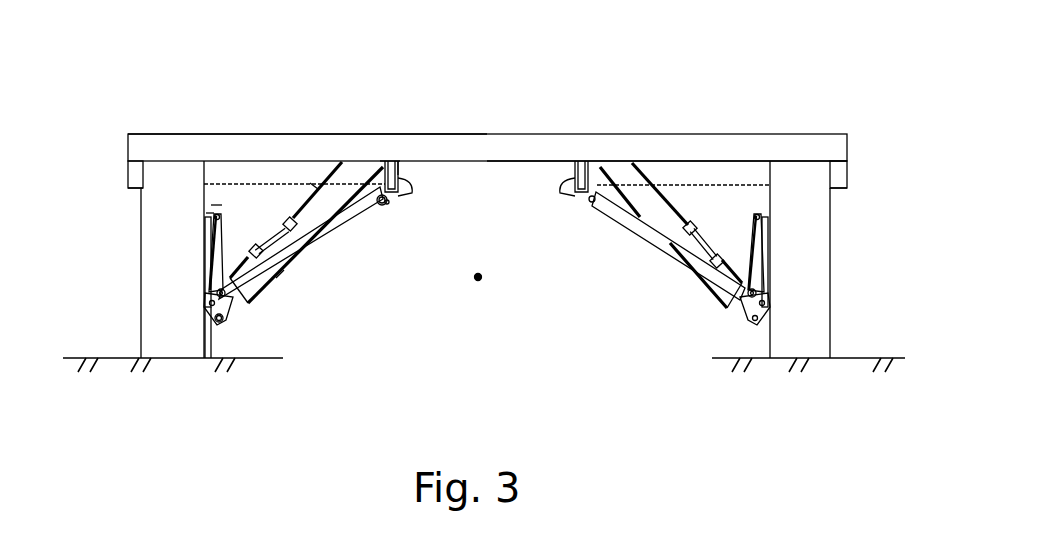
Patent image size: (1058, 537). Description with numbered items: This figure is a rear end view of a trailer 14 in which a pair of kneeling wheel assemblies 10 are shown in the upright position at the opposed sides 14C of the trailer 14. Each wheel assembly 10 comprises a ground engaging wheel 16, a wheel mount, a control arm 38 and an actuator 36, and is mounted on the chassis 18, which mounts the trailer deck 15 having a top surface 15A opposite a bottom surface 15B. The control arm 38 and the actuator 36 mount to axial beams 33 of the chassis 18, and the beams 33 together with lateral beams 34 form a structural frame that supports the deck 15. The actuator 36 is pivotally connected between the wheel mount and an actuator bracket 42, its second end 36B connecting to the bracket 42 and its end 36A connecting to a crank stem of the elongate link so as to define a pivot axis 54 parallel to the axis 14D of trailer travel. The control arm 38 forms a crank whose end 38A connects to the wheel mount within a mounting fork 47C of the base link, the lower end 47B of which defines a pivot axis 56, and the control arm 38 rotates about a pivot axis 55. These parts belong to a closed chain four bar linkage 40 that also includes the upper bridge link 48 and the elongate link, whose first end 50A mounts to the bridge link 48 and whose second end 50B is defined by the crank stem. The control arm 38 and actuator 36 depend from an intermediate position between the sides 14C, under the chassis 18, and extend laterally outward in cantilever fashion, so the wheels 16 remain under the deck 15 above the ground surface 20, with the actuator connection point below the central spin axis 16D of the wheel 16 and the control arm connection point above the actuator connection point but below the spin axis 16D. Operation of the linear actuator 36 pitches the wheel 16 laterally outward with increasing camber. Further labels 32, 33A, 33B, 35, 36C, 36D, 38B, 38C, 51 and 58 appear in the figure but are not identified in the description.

The wheel assembly 10 is at (122, 72).
The trailer 14 is at (535, 137).
The opposed sides of the trailer 14C is at (118, 160).
The axis of trailer travel 14D is at (482, 278).
The trailer deck 15 is at (742, 136).
The top surface of the deck 15A is at (430, 134).
The bottom surface of the deck 15B is at (498, 162).
The ground engaging wheel 16 is at (147, 307).
The central spin axis of the wheel 16D is at (80, 260).
The chassis 18 is at (401, 170).
The ground surface 20 is at (247, 358).
The outward direction 32 is at (95, 203).
The axial beams 33 is at (400, 161).
The bracket upper portion 33A is at (387, 161).
The bracket pivot portion 33B is at (400, 204).
The lateral beams 34 is at (242, 172).
The rotation direction 35 is at (302, 329).
The actuator 36 is at (338, 193).
The end of the actuator 36A is at (222, 320).
The second end of the actuator 36B is at (308, 125).
The link arm lower region 36C is at (277, 280).
The link arm upper end 36D is at (313, 186).
The control arm 38 is at (482, 235).
The end of the control arm 38A is at (233, 260).
The actuator upper end 38B is at (387, 204).
The actuator cylinder 38C is at (270, 238).
The closed chain linkage 40 is at (223, 202).
The actuator bracket 42 is at (388, 165).
The lower end of the base link 47B is at (207, 358).
The mounting fork 47C is at (243, 364).
The upper bridge link 48 is at (207, 213).
The first end of the elongate link 50A is at (208, 214).
The second end of the elongate link 50B is at (218, 297).
The leg plate 51 is at (207, 213).
The pivot axis 54 is at (221, 324).
The pivot axis 55 is at (211, 305).
The pivot axis 56 is at (240, 305).
The pivot pin 58 is at (380, 205).